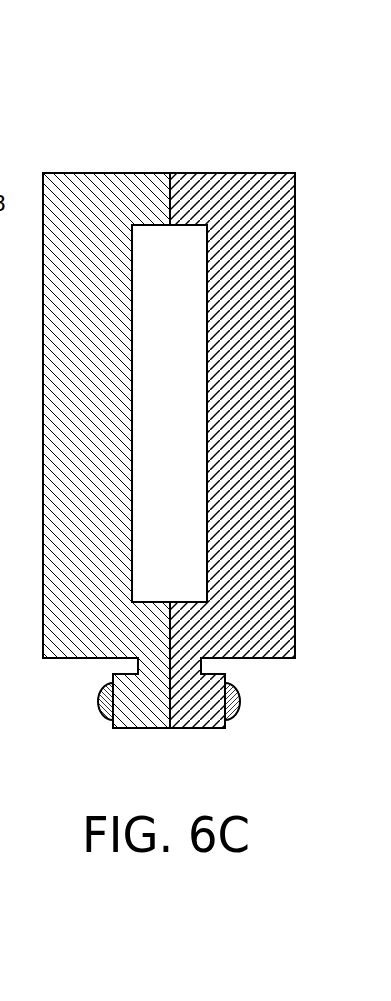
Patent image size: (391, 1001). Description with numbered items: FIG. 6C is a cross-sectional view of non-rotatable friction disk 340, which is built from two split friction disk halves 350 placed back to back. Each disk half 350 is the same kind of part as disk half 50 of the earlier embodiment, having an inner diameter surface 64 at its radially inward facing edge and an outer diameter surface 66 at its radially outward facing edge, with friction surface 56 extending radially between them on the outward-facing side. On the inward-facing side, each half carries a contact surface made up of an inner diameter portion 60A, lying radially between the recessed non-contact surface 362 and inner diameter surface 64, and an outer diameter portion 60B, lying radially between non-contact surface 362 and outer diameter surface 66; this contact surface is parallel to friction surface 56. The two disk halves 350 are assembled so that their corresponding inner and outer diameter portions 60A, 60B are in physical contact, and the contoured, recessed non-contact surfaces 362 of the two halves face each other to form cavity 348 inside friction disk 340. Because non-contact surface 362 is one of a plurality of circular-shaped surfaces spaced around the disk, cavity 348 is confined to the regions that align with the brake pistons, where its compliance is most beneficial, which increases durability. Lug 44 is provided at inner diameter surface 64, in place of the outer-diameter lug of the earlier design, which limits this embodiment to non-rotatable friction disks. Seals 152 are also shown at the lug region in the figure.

The non-rotatable friction disk 340 is at (218, 120).
The disk half 50 is at (55, 170).
The disk half 350 is at (267, 171).
The outer diameter surface 66 is at (140, 172).
The outer diameter portion 60B is at (173, 190).
The inner diameter portion 60A is at (172, 637).
The cavity 348 is at (192, 360).
The non-contact surface 362 is at (207, 484).
The friction surface 56 is at (297, 487).
The inner diameter surface 64 is at (72, 660).
The lug 44 is at (193, 730).
The O-ring seal 152 is at (229, 666).